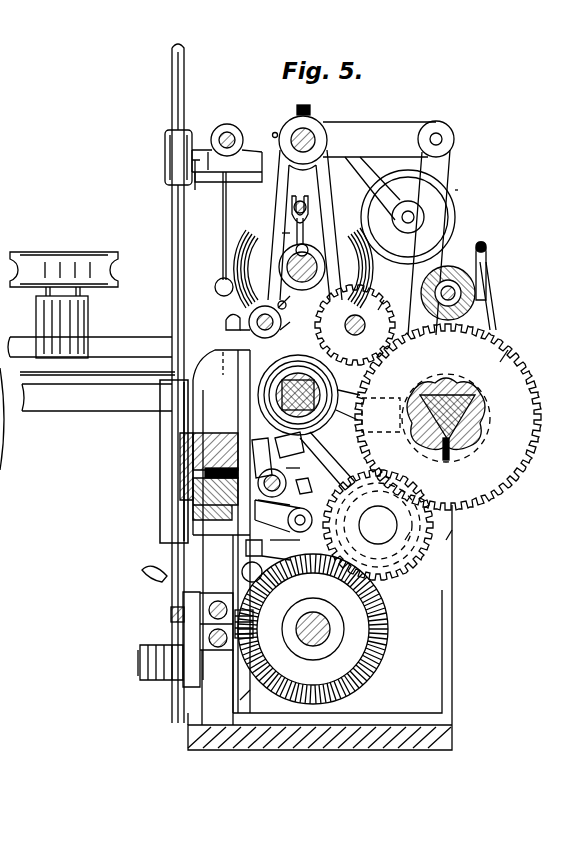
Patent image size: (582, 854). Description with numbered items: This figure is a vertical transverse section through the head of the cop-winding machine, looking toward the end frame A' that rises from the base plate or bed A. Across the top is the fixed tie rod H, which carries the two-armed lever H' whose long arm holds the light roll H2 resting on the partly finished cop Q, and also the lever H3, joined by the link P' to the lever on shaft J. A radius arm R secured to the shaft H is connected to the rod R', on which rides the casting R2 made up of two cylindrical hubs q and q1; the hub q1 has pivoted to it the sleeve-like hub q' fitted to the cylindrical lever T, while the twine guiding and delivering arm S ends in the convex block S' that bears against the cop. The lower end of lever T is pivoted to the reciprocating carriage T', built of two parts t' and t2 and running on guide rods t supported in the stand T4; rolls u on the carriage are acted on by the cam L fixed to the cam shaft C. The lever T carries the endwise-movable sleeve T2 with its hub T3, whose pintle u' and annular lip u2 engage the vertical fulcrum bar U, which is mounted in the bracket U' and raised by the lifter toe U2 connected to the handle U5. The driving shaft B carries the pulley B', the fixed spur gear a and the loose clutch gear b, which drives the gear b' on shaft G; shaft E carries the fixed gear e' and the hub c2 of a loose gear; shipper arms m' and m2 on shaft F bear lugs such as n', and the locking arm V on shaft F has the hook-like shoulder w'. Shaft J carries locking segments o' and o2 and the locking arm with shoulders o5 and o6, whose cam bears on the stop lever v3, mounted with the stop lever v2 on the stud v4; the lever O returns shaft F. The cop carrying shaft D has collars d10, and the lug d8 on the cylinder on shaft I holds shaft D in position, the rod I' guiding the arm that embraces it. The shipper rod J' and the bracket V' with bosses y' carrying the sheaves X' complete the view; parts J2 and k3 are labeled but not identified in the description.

The cylindrical lever T is at (165, 383).
The cylindrical hub q1 is at (166, 165).
The radius arm R is at (227, 138).
The rod R' is at (227, 123).
The cylindrical hub q is at (217, 138).
The sleeve-like hub q' is at (228, 181).
The casting R2 is at (210, 165).
The twine guiding and delivering arm S is at (211, 226).
The block S' is at (187, 450).
The shaft or rod H is at (309, 123).
The end frame A' is at (349, 417).
The rod I' is at (306, 214).
The cop carrying shaft D is at (270, 288).
The collars d10 is at (285, 233).
The lug d8 is at (286, 305).
The partly finished cop Q is at (303, 255).
The lever H3 is at (388, 139).
The two-armed lever H' is at (400, 210).
The light roll H2 is at (466, 187).
The link P' is at (429, 242).
The shipper rod J' is at (448, 284).
The pin J2 is at (487, 262).
The shaft G is at (355, 325).
The gear wheel b' is at (385, 297).
The driving shaft B is at (451, 417).
The spur gear wheel b is at (512, 347).
The hub k3 is at (482, 436).
The shipper arm m2 is at (381, 415).
The shaft E is at (378, 525).
The spur gear wheel a is at (405, 543).
The gear e' is at (447, 542).
The shaft F is at (282, 380).
The sleeve-like hub c2 is at (226, 326).
The shaft I is at (265, 319).
The sheave X' is at (64, 261).
The boss y' is at (50, 327).
The bracket V' is at (91, 356).
The lever O is at (97, 397).
The pulley B' is at (7, 419).
The stand or bracket U' is at (221, 531).
The pintle u' is at (215, 437).
The sleeve T2 is at (164, 418).
The hub T3 is at (182, 470).
The annular lip u2 is at (215, 500).
The vertical fulcrum bar U is at (219, 624).
The lug n' is at (289, 445).
The shipper arm m' is at (327, 461).
The locking segment o' is at (262, 458).
The shaft J is at (280, 483).
The locking segment o2 is at (293, 473).
The shoulder o5 is at (304, 489).
The locking arm V is at (292, 511).
The shoulder o6 is at (274, 507).
The hook-like shoulder w' is at (285, 547).
The stop lever v3 is at (254, 547).
The stop lever v2 is at (276, 563).
The stud v4 is at (252, 572).
The cam L is at (313, 629).
The cam shaft C is at (330, 632).
The cam or lifter toe U2 is at (254, 696).
The rolls u is at (252, 624).
The guide rods t is at (216, 623).
The carriage part t2 is at (216, 625).
The reciprocating carriage T' is at (163, 651).
The carriage part t' is at (191, 639).
The stand T4 is at (217, 687).
The handle U5 is at (142, 574).
The base plate or bed A is at (174, 731).